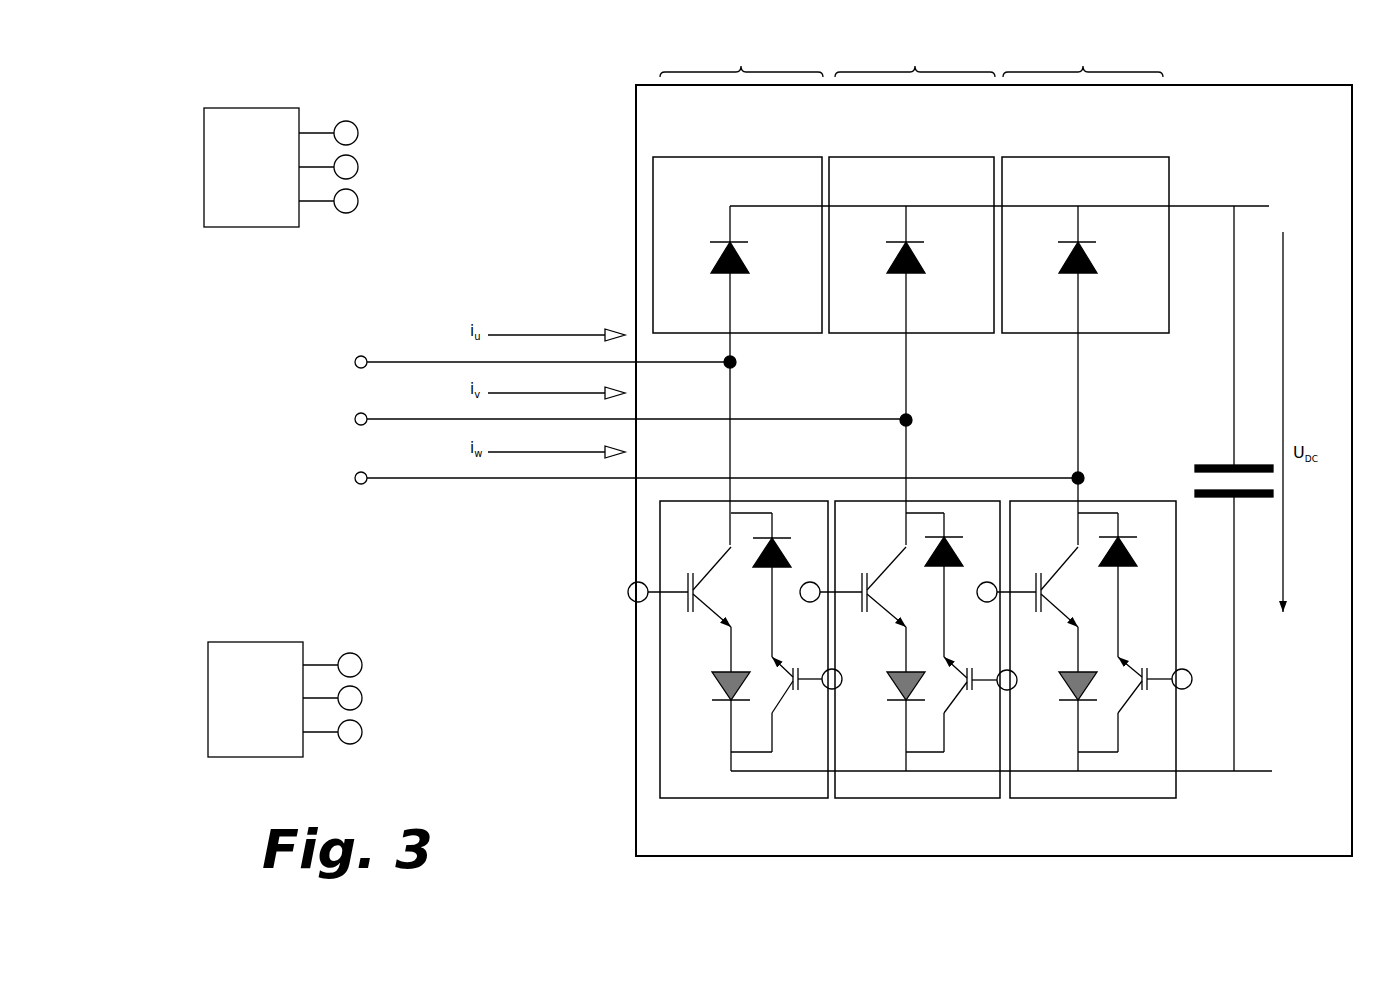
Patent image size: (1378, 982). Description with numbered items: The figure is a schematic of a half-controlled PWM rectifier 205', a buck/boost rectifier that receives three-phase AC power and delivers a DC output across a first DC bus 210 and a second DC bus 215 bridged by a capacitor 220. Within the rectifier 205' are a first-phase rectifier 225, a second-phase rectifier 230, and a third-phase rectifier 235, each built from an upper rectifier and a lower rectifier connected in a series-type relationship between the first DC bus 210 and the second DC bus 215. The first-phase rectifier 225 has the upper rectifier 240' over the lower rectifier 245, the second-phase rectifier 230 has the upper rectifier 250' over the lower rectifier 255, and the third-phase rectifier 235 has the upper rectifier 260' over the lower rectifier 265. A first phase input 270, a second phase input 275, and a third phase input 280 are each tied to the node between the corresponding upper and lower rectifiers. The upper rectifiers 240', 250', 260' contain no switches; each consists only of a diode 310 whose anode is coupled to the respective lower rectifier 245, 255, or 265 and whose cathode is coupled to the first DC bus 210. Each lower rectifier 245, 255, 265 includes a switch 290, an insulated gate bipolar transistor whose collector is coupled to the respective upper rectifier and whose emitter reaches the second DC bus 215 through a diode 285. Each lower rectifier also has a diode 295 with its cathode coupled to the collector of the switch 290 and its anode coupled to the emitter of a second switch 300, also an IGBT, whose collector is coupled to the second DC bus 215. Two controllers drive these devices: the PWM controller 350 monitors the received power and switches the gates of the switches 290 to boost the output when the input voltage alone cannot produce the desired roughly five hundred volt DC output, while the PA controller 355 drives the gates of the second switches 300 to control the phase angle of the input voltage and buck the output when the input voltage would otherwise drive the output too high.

The half-controlled PWM rectifier 205' is at (962, 457).
The first DC bus 210 is at (1192, 205).
The second DC bus 215 is at (1233, 772).
The capacitor 220 is at (1198, 464).
The first-phase rectifier 225 is at (741, 60).
The second-phase rectifier 230 is at (915, 60).
The third-phase rectifier 235 is at (1083, 60).
The upper rectifier 240' is at (737, 272).
The upper rectifier 250' is at (911, 291).
The upper rectifier 260' is at (1085, 320).
The lower rectifier 245 is at (757, 800).
The lower rectifier 255 is at (930, 800).
The lower rectifier 265 is at (1120, 798).
The first phase input 270 is at (365, 357).
The second phase input 275 is at (365, 414).
The third phase input 280 is at (365, 473).
The diode 285 is at (727, 705).
The switch 290 is at (675, 580).
The diode 295 is at (762, 538).
The second switch 300 is at (787, 690).
The diode 310 is at (750, 247).
The PWM controller 350 is at (203, 167).
The PA controller 355 is at (208, 692).